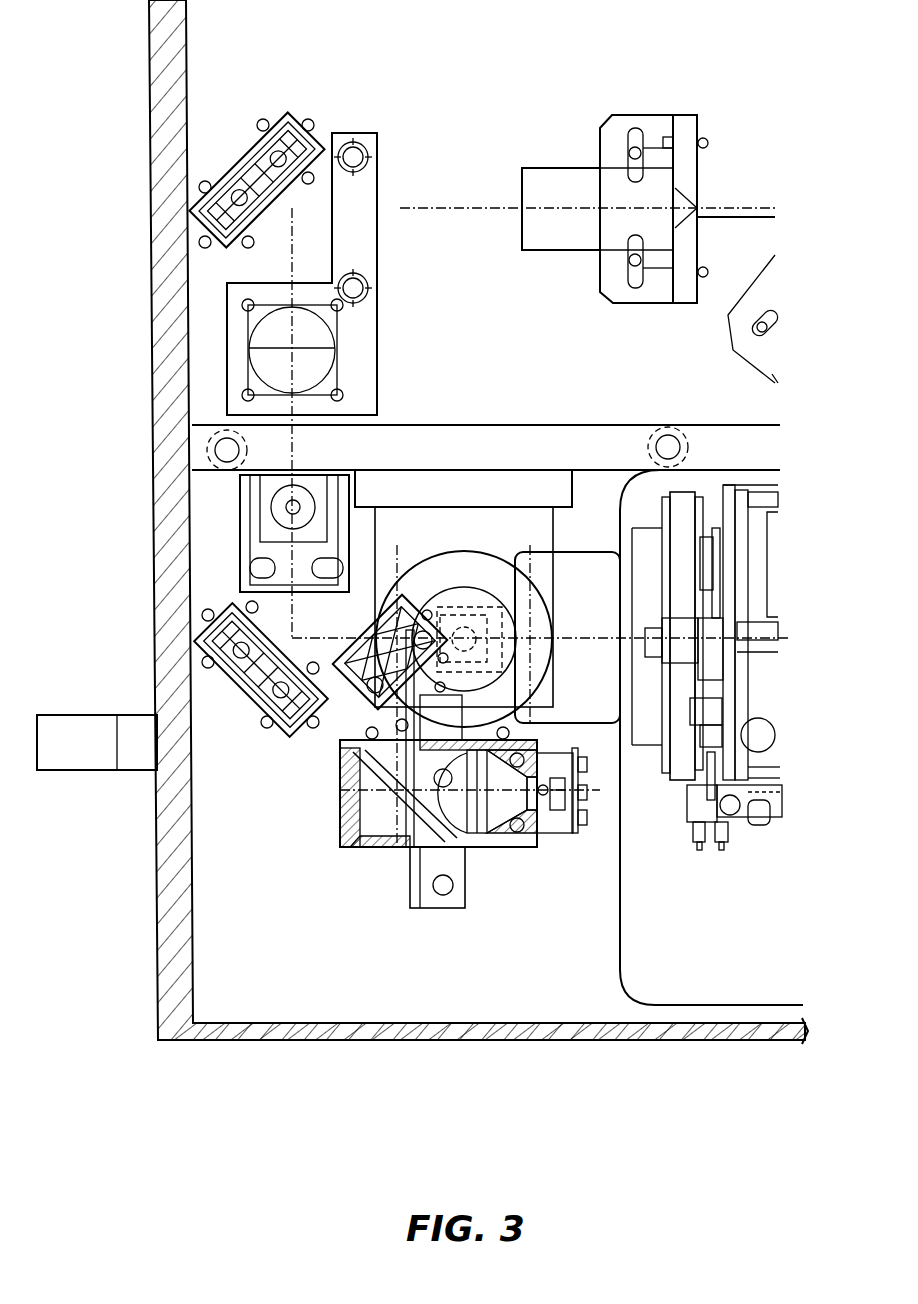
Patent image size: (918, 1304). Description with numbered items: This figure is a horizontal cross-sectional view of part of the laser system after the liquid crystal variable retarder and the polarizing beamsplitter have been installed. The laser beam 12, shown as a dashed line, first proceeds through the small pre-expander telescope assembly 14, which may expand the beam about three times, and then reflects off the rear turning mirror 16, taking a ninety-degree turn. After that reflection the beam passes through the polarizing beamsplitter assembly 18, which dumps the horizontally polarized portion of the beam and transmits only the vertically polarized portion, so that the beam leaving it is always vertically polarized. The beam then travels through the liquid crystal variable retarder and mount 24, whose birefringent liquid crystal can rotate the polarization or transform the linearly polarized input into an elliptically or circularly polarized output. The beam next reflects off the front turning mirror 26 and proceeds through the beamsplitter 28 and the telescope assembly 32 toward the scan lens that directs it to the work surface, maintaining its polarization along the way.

The laser beam 12 is at (485, 208).
The pre-expander telescope assembly 14 is at (567, 168).
The rear turning mirror 16 is at (256, 158).
The polarizing beamsplitter assembly 18 is at (207, 340).
The liquid crystal variable retarder and mount 24 is at (240, 535).
The front turning mirror 26 is at (205, 615).
The beamsplitter 28 is at (368, 693).
The telescope assembly 32 is at (758, 937).